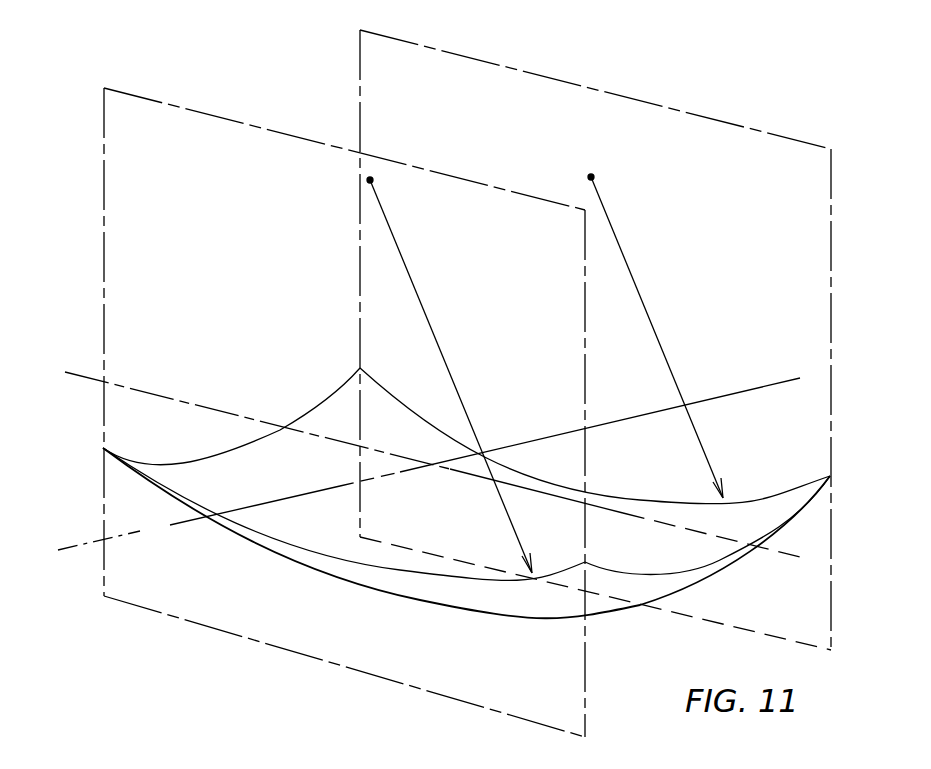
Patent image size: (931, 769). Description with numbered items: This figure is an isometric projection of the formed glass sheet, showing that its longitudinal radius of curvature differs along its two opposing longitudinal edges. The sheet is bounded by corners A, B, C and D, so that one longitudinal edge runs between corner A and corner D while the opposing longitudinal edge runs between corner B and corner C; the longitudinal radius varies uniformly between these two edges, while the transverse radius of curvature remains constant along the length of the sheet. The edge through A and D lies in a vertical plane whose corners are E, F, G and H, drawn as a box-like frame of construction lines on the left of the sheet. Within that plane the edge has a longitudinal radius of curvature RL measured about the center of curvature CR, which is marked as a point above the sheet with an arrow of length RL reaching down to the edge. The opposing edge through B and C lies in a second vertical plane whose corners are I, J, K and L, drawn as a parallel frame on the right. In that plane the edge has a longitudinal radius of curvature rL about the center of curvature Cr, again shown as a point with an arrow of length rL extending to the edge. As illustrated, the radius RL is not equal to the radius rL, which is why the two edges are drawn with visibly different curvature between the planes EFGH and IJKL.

The vertical plane corner F is at (104, 88).
The vertical plane corner G is at (104, 596).
The vertical plane corner J is at (361, 30).
The vertical plane corner I is at (831, 149).
The vertical plane corner L is at (810, 650).
The vertical plane corner E is at (586, 210).
The vertical plane corner H is at (585, 737).
The vertical plane corner K is at (360, 535).
The glass sheet corner D is at (103, 448).
The glass sheet corner C is at (360, 368).
The glass sheet corner A is at (586, 560).
The glass sheet corner B is at (831, 476).
The center of curvature C_R CR is at (372, 181).
The longitudinal radius of curvature R_L RL is at (422, 302).
The center of curvature C_r Cr is at (593, 176).
The longitudinal radius of curvature r_L rL is at (635, 282).